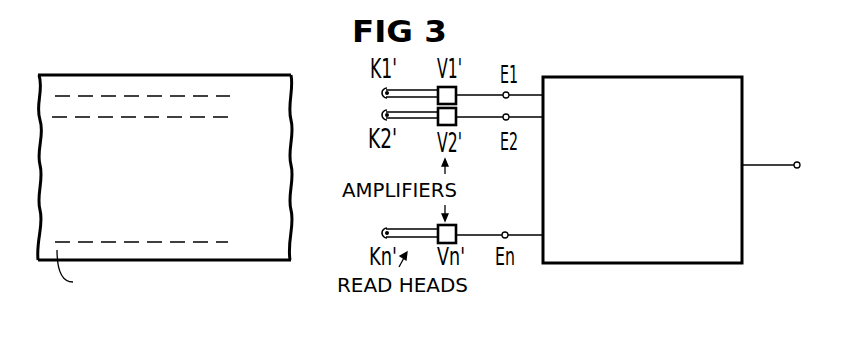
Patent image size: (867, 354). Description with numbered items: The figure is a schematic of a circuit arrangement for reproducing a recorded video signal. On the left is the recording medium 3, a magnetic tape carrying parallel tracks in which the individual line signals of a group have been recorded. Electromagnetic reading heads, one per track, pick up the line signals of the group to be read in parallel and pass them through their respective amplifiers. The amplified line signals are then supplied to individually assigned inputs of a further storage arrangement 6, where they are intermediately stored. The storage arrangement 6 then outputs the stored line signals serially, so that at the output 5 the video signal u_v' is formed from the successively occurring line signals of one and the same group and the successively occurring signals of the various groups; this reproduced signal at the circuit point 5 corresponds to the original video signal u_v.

The recording medium 3 is at (125, 76).
The output 5 is at (776, 170).
The storage arrangement 6 is at (637, 250).